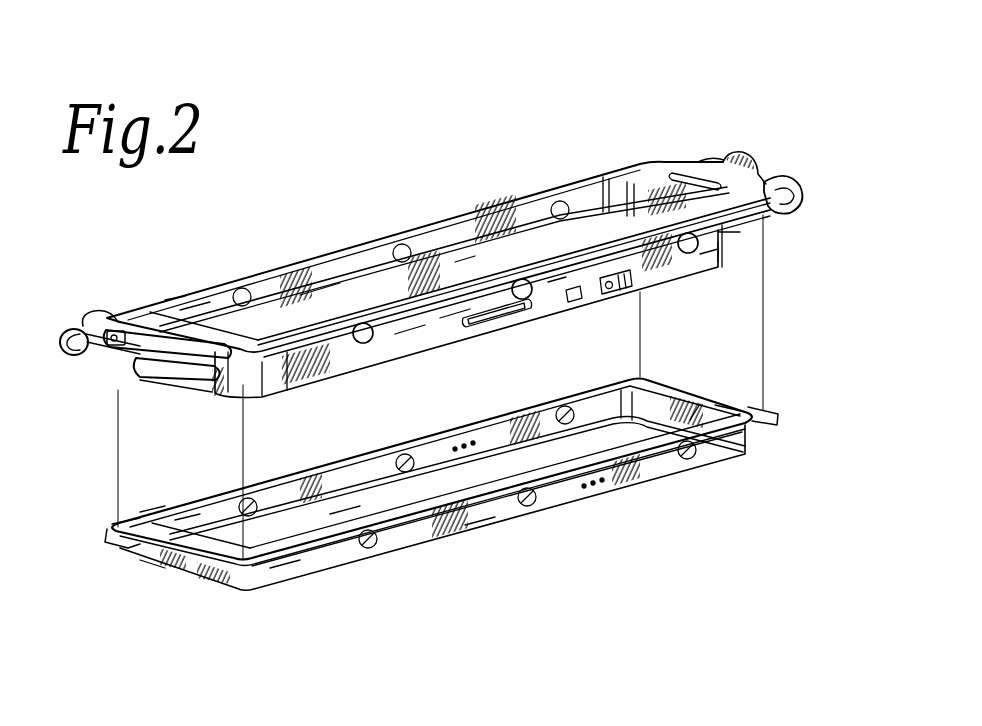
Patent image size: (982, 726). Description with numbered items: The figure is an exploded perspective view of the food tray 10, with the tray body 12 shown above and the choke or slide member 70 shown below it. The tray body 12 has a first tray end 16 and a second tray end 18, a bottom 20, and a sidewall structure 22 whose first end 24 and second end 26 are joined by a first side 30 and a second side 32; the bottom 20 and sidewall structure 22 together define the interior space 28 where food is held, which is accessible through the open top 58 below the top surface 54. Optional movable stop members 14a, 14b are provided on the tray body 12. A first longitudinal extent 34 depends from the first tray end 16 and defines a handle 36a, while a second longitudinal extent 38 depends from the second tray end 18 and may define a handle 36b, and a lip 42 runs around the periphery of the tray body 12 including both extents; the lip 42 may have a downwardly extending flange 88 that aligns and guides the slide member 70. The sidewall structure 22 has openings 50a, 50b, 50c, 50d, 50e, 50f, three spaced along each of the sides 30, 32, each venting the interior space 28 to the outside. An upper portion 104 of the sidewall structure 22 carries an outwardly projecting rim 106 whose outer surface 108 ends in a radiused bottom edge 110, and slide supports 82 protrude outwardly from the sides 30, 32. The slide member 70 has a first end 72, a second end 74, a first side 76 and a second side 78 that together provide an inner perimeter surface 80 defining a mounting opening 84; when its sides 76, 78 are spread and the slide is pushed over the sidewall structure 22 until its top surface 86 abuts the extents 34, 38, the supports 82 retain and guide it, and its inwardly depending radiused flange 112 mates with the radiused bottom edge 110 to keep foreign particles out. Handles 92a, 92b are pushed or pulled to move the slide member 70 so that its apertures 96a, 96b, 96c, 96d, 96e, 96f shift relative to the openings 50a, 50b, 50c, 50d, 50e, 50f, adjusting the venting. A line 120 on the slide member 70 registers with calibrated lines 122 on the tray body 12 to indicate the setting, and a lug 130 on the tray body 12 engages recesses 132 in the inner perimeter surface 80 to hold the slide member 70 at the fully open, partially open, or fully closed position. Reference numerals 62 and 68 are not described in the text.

The food tray 10 is at (638, 88).
The tray body 12 is at (683, 291).
The movable stop member 14a is at (118, 352).
The movable stop member 14b is at (747, 157).
The first tray end 16 is at (108, 362).
The second tray end 18 is at (760, 163).
The bottom 20 is at (263, 393).
The sidewall structure 22 is at (205, 380).
The first end 24 is at (172, 392).
The second end 26 is at (718, 257).
The interior space 28 is at (464, 258).
The first side 30 is at (287, 377).
The second side 32 is at (194, 307).
The first longitudinal extent 34 is at (113, 313).
The handle 36a is at (97, 311).
The handle 36b is at (690, 162).
The second longitudinal extent 38 is at (663, 163).
The lip 42 is at (173, 297).
The opening 50a is at (362, 344).
The opening 50b is at (530, 298).
The opening 50c is at (674, 260).
The opening 50d is at (238, 288).
The opening 50e is at (400, 244).
The opening 50f is at (560, 201).
The top surface 54 is at (140, 312).
The open top 58 is at (597, 190).
The post 62 is at (632, 197).
The inner wall 68 is at (318, 305).
The slide member 70 is at (173, 592).
The first end 72 is at (150, 564).
The second end 74 is at (730, 403).
The first side 76 is at (280, 568).
The second side 78 is at (190, 520).
The inner perimeter surface 80 is at (152, 512).
The slide support 82 is at (483, 325).
The mounting opening 84 is at (340, 512).
The top surface 86 is at (110, 527).
The flange 88 is at (236, 363).
The handle 92a is at (127, 544).
The handle 92b is at (777, 414).
The aperture 96a is at (376, 548).
The aperture 96b is at (527, 506).
The aperture 96c is at (686, 459).
The aperture 96d is at (240, 501).
The aperture 96e is at (397, 458).
The aperture 96f is at (560, 409).
The upper portion 104 is at (727, 240).
The rim 106 is at (740, 228).
The outer surface 108 is at (408, 322).
The radiused bottom edge 110 is at (457, 303).
The radiused flange 112 is at (477, 523).
The line 120 is at (573, 500).
The calibrated lines 122 is at (577, 312).
The lug 130 is at (557, 278).
The recesses 132 is at (596, 491).